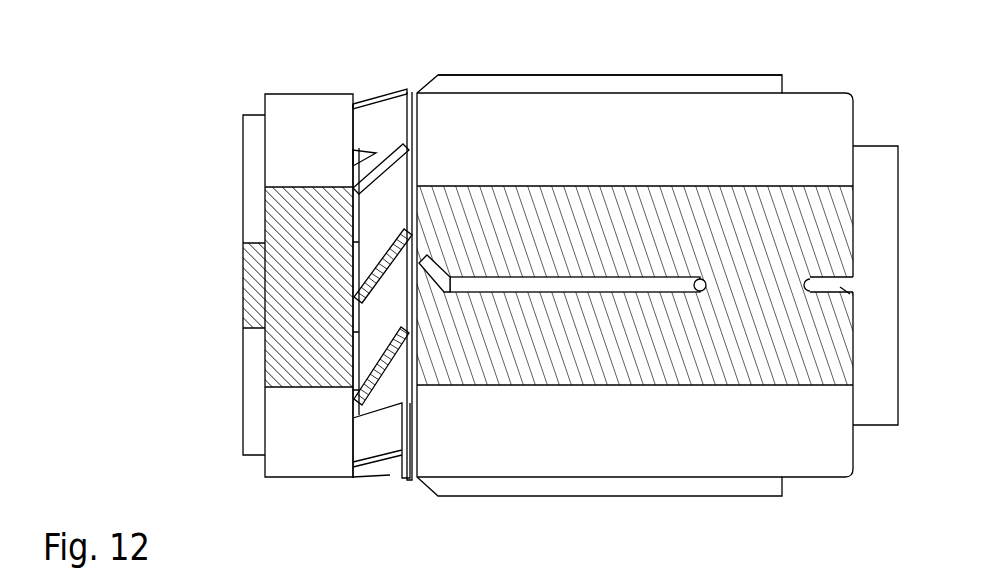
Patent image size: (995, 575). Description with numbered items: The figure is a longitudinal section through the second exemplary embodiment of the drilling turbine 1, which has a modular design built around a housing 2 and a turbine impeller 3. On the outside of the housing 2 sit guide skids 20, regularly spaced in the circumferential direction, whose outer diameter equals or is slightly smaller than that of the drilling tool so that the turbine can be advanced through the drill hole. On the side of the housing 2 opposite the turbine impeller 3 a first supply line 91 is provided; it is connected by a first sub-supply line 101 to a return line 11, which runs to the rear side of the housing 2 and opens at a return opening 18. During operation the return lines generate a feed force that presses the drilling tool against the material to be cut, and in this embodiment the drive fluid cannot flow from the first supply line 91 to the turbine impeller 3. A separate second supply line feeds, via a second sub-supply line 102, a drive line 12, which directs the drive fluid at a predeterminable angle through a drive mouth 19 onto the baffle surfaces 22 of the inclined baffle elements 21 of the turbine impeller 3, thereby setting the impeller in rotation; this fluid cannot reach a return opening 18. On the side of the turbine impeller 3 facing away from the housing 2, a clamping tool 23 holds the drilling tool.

The drilling turbine 1 is at (897, 84).
The housing 2 is at (820, 440).
The turbine impeller 3 is at (253, 310).
The return line 11 is at (846, 298).
The drive line 12 is at (526, 292).
The return opening 18 is at (853, 289).
The drive mouth 19 is at (423, 262).
The guide skid 20 is at (752, 82).
The baffle element 21 is at (392, 475).
The baffle surface 22 is at (400, 118).
The clamping tool 23 is at (263, 115).
The first supply line 91 is at (887, 413).
The first sub-supply line 101 is at (807, 279).
The second sub-supply line 102 is at (703, 292).